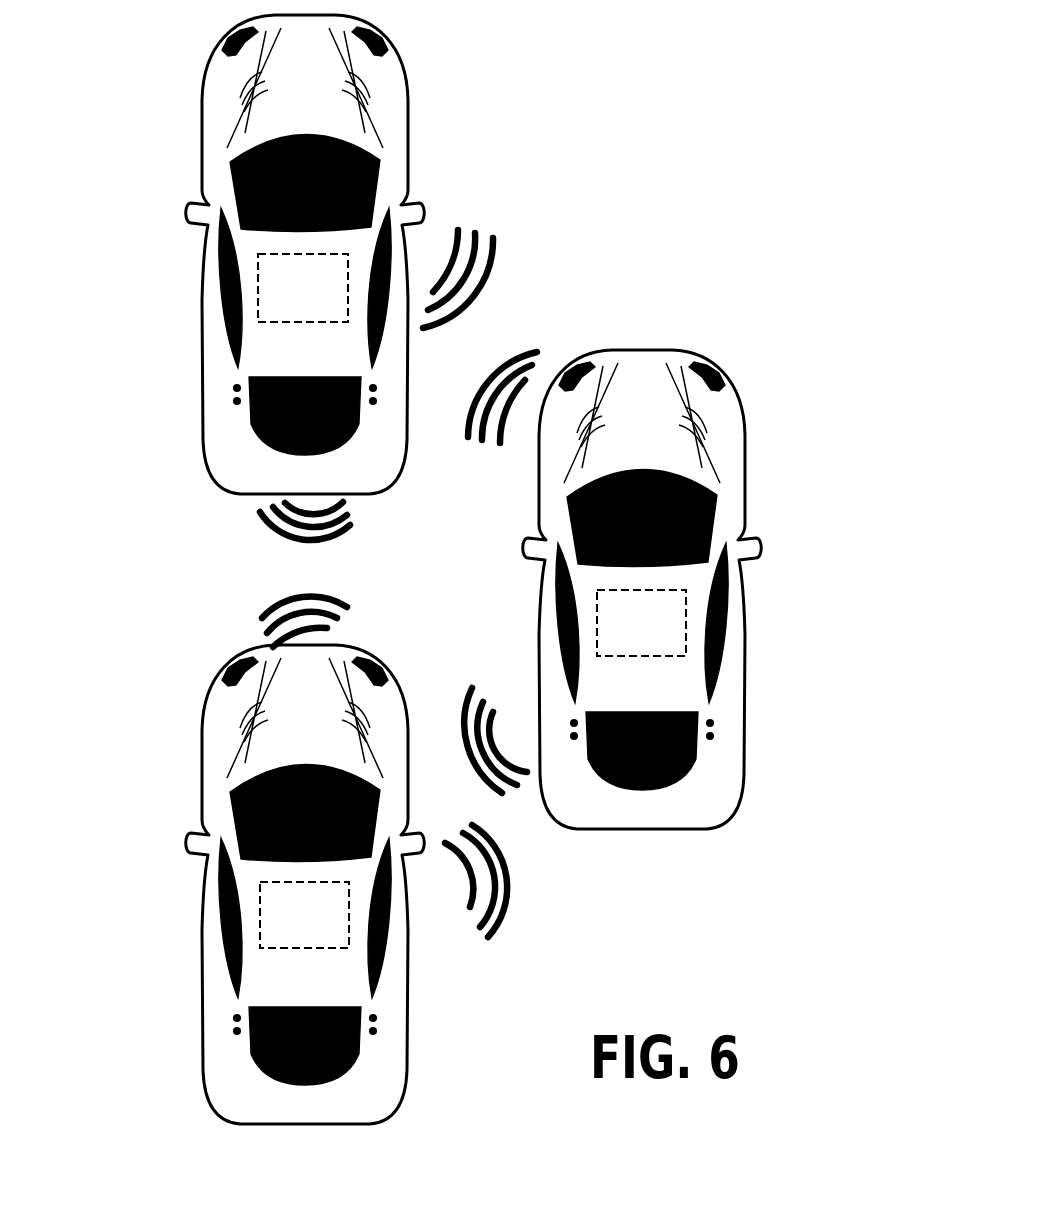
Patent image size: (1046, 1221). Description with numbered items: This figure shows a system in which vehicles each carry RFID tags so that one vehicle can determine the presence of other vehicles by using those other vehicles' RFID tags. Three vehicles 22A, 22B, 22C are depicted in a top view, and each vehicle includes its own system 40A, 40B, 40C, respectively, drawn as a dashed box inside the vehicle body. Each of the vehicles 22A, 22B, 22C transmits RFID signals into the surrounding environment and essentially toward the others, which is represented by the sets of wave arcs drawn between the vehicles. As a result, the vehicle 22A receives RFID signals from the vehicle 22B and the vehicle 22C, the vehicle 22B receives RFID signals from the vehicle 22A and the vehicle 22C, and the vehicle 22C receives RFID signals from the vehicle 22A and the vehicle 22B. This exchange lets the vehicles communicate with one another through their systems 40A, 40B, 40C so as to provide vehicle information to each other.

The vehicle 22A is at (398, 112).
The vehicle 22B is at (733, 439).
The vehicle 22C is at (378, 1056).
The system 40A is at (290, 278).
The system 40B is at (660, 626).
The system 40C is at (293, 920).